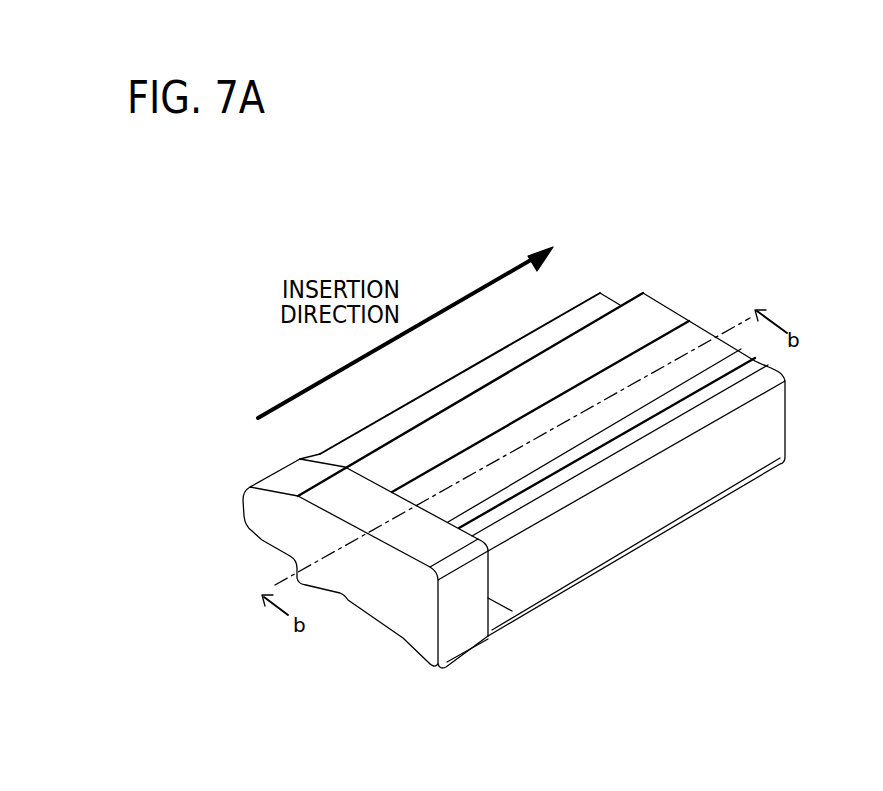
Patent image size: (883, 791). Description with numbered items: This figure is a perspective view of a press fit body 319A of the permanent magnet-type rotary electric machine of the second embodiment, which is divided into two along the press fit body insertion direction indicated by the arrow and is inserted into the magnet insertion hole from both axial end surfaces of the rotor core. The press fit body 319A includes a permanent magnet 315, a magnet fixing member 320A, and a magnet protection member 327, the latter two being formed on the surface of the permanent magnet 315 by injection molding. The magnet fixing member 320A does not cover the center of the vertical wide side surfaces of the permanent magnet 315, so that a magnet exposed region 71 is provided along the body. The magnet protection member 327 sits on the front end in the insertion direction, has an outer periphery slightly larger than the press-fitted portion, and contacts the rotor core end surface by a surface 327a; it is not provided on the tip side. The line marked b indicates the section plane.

The press fit body 319A is at (729, 528).
The magnet fixing member 320A is at (655, 328).
The permanent magnet 315 is at (678, 342).
The magnet exposed region 71 is at (615, 408).
The magnet protection member 327 is at (412, 608).
The surface 327a is at (490, 599).